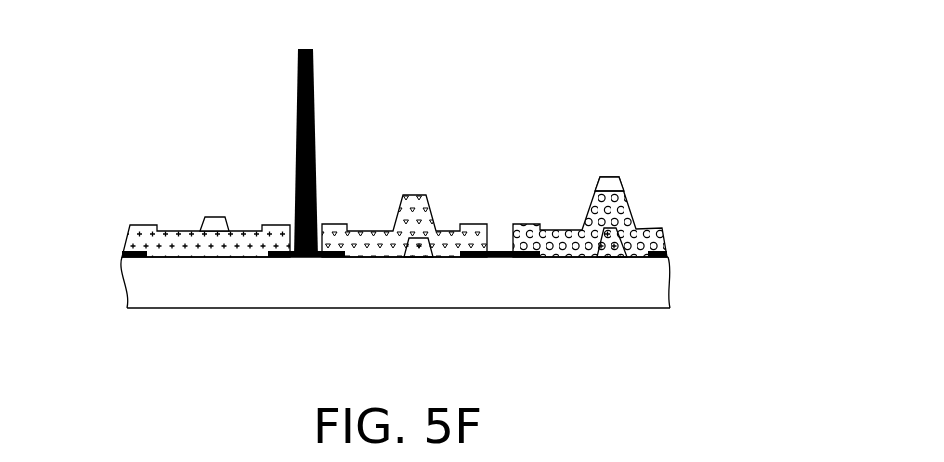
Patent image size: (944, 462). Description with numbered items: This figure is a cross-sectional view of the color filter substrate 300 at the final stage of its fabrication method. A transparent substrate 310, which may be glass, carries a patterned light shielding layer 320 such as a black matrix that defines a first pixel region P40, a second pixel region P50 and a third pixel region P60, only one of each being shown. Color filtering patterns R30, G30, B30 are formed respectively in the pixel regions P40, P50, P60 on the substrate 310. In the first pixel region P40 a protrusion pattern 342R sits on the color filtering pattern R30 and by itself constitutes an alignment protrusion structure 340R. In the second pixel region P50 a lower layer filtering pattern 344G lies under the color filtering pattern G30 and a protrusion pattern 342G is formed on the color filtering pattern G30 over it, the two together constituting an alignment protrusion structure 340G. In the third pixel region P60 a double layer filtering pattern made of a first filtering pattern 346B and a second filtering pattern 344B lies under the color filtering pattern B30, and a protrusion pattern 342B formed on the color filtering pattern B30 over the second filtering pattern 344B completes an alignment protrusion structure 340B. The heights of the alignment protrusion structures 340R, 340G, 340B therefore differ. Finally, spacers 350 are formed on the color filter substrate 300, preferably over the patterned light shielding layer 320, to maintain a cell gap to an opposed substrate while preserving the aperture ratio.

The color filter substrate 300 is at (685, 395).
The substrate 310 is at (584, 282).
The patterned light shielding layer 320 is at (500, 257).
The spacer 350 is at (313, 76).
The alignment protrusion structure 340R is at (171, 220).
The protrusion pattern 342R is at (223, 226).
The alignment protrusion structure 340G is at (560, 63).
The protrusion pattern 342G is at (417, 202).
The lower layer filtering pattern 344G is at (427, 246).
The alignment protrusion structure 340B is at (780, 147).
The protrusion pattern 342B is at (608, 185).
The second filtering pattern 344B is at (612, 230).
The first filtering pattern 346B is at (650, 233).
The first pixel region P40 is at (275, 158).
The second pixel region P50 is at (467, 158).
The third pixel region P60 is at (672, 158).
The color filtering pattern R30 is at (202, 248).
The color filtering pattern G30 is at (367, 253).
The color filtering pattern B30 is at (562, 252).